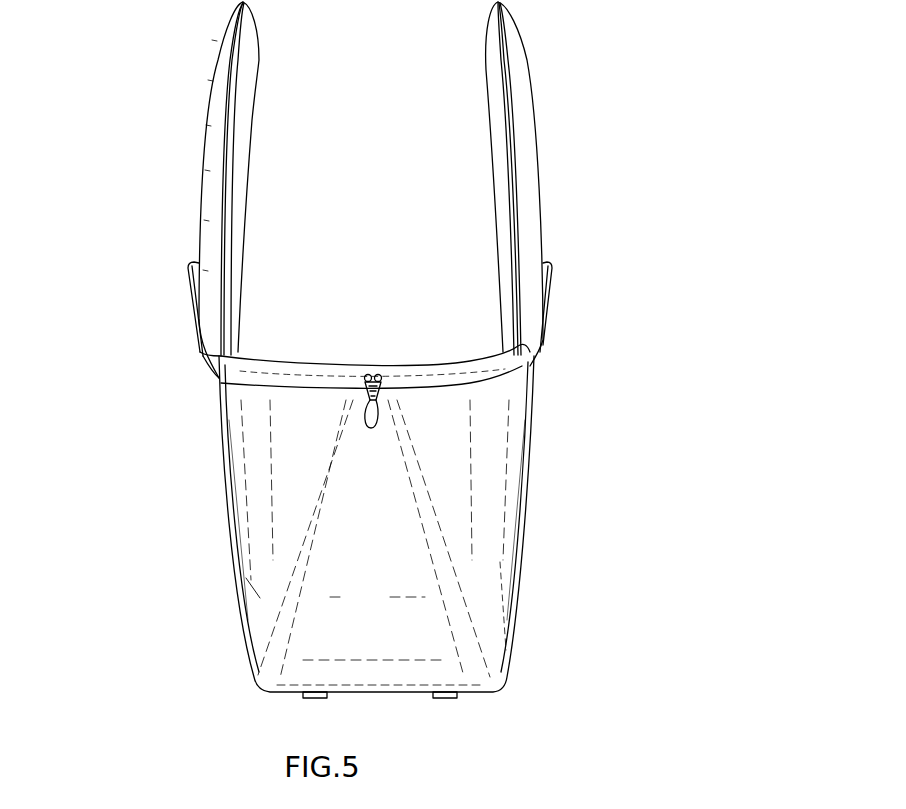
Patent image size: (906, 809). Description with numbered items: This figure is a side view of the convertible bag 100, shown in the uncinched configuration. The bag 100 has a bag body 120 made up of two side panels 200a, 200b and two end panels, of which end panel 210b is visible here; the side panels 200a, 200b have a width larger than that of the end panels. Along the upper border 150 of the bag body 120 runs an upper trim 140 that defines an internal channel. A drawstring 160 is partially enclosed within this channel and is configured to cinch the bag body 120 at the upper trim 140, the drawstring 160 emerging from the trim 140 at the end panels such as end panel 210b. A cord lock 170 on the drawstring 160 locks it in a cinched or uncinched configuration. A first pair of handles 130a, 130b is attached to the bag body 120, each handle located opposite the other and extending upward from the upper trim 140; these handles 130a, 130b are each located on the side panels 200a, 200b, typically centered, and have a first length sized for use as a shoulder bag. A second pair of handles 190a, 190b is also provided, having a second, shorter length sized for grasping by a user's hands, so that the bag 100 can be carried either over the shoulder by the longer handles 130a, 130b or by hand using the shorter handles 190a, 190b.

The convertible bag 100 is at (655, 118).
The bag body 120 is at (220, 380).
The first handle 130a is at (217, 120).
The first handle 130b is at (525, 129).
The upper trim 140 is at (520, 355).
The upper border 150 is at (204, 358).
The drawstring 160 is at (382, 416).
The cord lock 170 is at (368, 373).
The second handle 190a is at (193, 283).
The second handle 190b is at (543, 308).
The side panel 200a is at (230, 513).
The side panel 200b is at (522, 513).
The end panel 210b is at (502, 568).